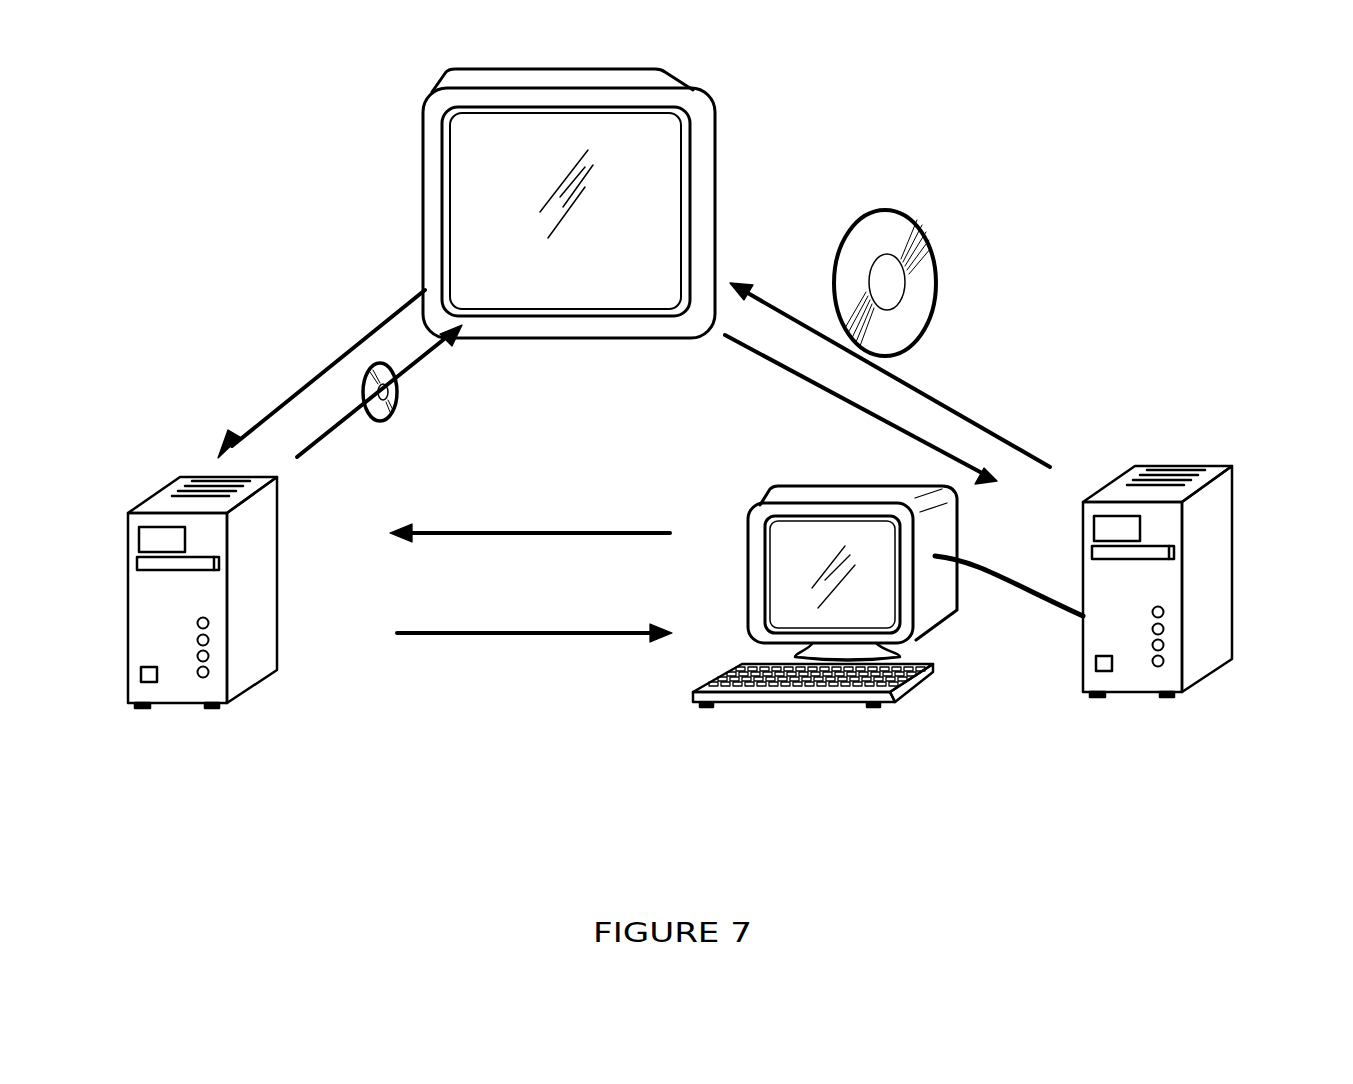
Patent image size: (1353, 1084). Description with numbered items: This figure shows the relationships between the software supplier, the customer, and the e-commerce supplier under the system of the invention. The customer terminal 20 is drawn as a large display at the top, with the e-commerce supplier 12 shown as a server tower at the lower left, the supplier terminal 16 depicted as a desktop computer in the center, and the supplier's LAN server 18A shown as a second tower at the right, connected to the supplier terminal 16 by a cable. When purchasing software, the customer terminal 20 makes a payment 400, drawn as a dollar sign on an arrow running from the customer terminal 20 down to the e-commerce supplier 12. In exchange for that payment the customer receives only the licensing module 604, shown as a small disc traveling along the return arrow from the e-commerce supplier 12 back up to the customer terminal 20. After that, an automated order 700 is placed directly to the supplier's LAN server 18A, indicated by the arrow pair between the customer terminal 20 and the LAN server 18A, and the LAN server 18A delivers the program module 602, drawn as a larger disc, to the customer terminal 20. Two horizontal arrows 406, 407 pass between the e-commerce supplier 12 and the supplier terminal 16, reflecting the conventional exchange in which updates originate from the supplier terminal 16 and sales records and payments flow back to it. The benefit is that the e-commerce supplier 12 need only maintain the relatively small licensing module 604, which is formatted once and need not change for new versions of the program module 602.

The e-commerce supplier 12 is at (248, 658).
The supplier terminal 16 is at (758, 698).
The LAN server 18A is at (1190, 662).
The customer terminal 20 is at (508, 325).
The payment 400 is at (250, 330).
The request message 406 is at (528, 630).
The response message 407 is at (530, 531).
The program module 602 is at (887, 235).
The licensing module 604 is at (396, 388).
The automated order 700 is at (868, 417).